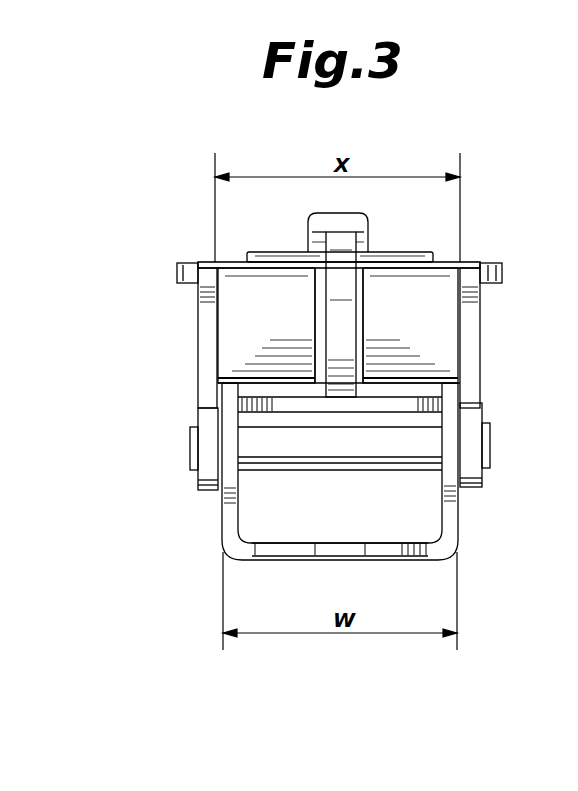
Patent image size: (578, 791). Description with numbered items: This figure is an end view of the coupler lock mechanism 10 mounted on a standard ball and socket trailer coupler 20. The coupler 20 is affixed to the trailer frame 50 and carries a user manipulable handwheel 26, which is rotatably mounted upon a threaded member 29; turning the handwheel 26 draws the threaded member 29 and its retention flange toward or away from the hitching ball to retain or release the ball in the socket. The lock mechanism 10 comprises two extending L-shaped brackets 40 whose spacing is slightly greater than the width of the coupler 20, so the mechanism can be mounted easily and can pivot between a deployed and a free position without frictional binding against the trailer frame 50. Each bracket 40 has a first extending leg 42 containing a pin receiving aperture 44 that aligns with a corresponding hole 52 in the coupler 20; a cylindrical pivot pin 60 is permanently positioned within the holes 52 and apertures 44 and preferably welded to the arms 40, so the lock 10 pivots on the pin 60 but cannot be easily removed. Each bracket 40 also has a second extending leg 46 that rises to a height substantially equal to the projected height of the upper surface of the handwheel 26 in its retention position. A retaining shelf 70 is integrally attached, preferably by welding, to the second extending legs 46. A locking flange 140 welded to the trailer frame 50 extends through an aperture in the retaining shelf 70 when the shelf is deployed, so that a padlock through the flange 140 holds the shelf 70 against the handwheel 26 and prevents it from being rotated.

The coupler lock mechanism 10 is at (199, 258).
The coupler 20 is at (474, 520).
The handwheel 26 is at (387, 251).
The threaded member 29 is at (310, 233).
The L-shaped bracket 40 is at (192, 348).
The first extending leg 42 is at (201, 416).
The pin receiving aperture 44 is at (193, 447).
The second extending leg 46 is at (201, 306).
The trailer frame 50 is at (221, 517).
The hole 52 is at (465, 445).
The cylindrical pivot pin 60 is at (343, 448).
The retaining shelf 70 is at (500, 262).
The locking flange 140 is at (336, 312).